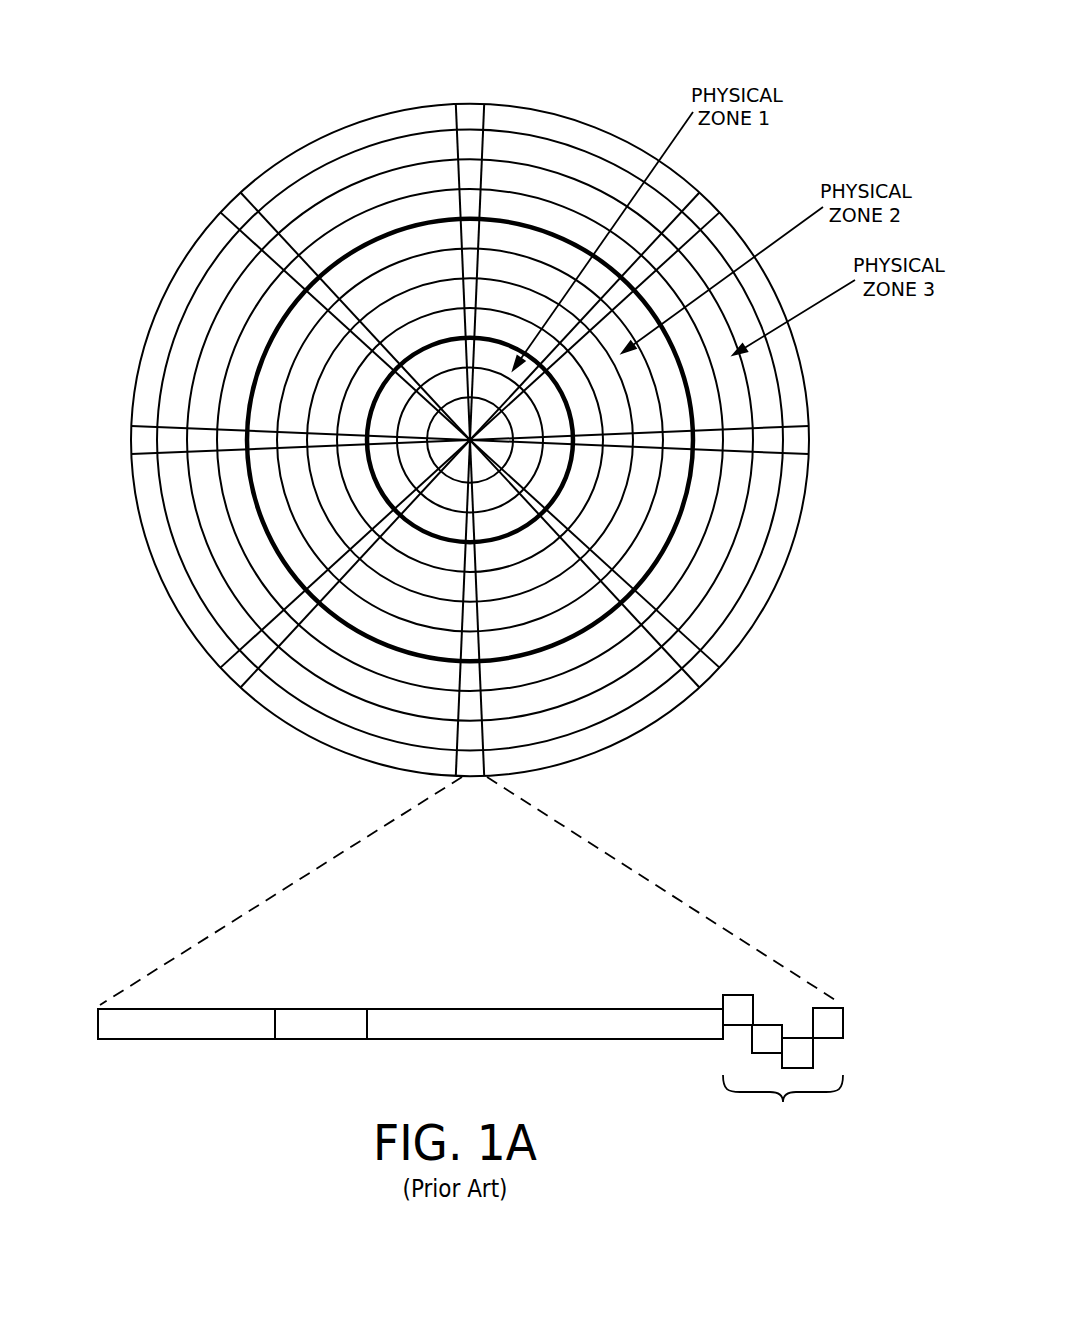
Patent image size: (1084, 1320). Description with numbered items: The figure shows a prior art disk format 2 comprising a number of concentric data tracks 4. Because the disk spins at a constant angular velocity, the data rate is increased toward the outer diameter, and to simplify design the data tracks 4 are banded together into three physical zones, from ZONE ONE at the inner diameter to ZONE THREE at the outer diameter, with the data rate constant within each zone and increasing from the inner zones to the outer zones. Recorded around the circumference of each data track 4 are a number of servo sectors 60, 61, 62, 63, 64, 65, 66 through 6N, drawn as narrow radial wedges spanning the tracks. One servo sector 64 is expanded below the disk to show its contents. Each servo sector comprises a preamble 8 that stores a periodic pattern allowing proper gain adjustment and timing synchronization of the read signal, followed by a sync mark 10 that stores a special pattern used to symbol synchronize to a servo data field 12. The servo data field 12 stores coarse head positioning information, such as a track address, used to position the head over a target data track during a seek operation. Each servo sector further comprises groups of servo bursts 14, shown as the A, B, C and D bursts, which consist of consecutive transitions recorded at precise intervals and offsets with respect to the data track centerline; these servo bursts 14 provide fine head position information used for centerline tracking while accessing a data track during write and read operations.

The disk format 2 is at (210, 102).
The data tracks 4 is at (593, 168).
The servo sector 60 is at (471, 115).
The servo sector 61 is at (702, 210).
The servo sector 62 is at (805, 442).
The servo sector 63 is at (705, 668).
The servo sector 64 is at (313, 850).
The servo sector 65 is at (233, 673).
The servo sector 66 is at (133, 438).
The servo sector 6N is at (237, 210).
The preamble 8 is at (167, 1040).
The sync mark 10 is at (318, 1040).
The servo data field 12 is at (530, 1040).
The servo bursts 14 is at (700, 971).